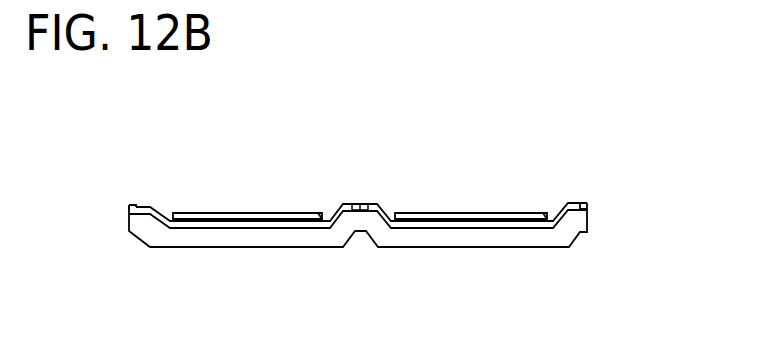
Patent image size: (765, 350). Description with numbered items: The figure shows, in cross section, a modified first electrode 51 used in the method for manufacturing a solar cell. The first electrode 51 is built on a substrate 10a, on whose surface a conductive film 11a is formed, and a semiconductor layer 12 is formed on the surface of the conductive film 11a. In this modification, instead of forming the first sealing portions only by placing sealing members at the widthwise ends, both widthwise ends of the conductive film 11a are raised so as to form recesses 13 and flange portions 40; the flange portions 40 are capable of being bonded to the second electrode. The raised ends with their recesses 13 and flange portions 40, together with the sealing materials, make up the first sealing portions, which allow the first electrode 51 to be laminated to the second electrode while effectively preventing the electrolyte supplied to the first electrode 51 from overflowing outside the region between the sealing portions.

The substrate 10a is at (535, 235).
The conductive film 11a is at (205, 224).
The semiconductor layer 12 is at (264, 211).
The recess 13 is at (322, 208).
The flange portion 40 is at (131, 204).
The first electrode 51 is at (616, 208).